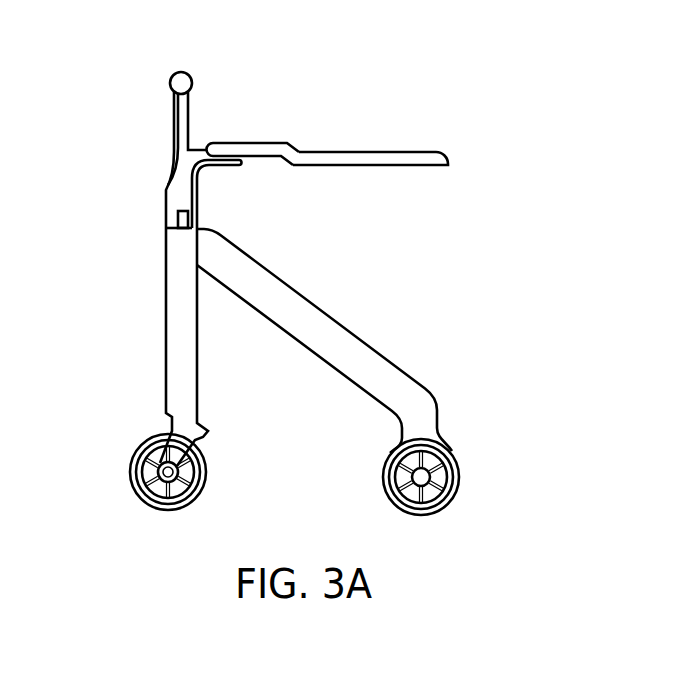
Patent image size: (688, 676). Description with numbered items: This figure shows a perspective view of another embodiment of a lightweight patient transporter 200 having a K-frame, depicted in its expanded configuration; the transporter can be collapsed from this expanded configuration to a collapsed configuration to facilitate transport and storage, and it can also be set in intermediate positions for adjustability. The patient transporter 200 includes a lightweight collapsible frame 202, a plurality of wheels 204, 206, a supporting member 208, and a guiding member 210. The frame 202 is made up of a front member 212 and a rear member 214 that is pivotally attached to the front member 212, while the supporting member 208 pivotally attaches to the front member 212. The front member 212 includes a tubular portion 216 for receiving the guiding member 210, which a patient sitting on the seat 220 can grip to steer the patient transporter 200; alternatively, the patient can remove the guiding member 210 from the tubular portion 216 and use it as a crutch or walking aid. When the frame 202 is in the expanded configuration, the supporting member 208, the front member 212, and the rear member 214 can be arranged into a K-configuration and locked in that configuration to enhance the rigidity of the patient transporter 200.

The patient transporter 200 is at (418, 68).
The collapsible frame 202 is at (220, 327).
The wheel 204 is at (140, 472).
The wheel 206 is at (450, 488).
The supporting member 208 is at (253, 148).
The guiding member 210 is at (180, 117).
The front member 212 is at (175, 387).
The rear member 214 is at (328, 330).
The tubular portion 216 is at (180, 247).
The seat 220 is at (427, 160).